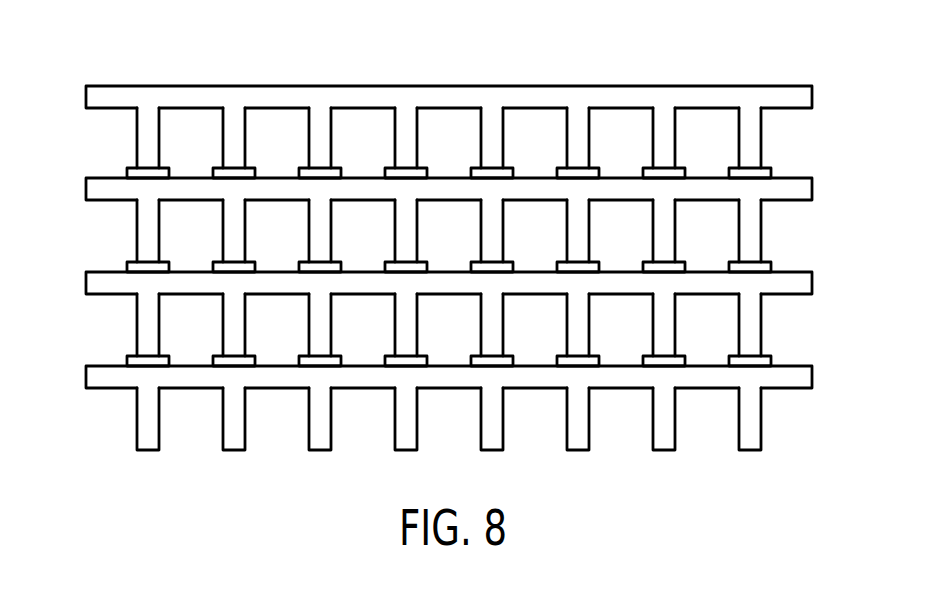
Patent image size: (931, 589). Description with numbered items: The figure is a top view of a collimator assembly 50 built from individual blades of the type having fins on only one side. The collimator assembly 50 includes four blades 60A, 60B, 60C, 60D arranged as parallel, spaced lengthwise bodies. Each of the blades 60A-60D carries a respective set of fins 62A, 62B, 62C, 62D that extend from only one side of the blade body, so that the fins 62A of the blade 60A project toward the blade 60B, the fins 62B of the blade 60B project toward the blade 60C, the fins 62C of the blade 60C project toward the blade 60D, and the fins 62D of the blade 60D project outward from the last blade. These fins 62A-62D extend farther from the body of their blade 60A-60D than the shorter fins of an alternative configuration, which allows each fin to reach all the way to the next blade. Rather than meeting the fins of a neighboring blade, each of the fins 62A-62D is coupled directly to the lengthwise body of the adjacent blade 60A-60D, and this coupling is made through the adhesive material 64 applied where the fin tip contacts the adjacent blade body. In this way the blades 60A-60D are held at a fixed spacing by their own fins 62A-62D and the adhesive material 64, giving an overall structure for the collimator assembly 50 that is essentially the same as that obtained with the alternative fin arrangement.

The collimator assembly 50 is at (119, 37).
The blade 60A is at (86, 96).
The blade 60B is at (86, 189).
The blade 60C is at (86, 283).
The blade 60D is at (86, 377).
The fins 62A is at (148, 150).
The fins 62B is at (148, 241).
The fins 62C is at (148, 334).
The fins 62D is at (148, 427).
The adhesive material 64 is at (161, 175).